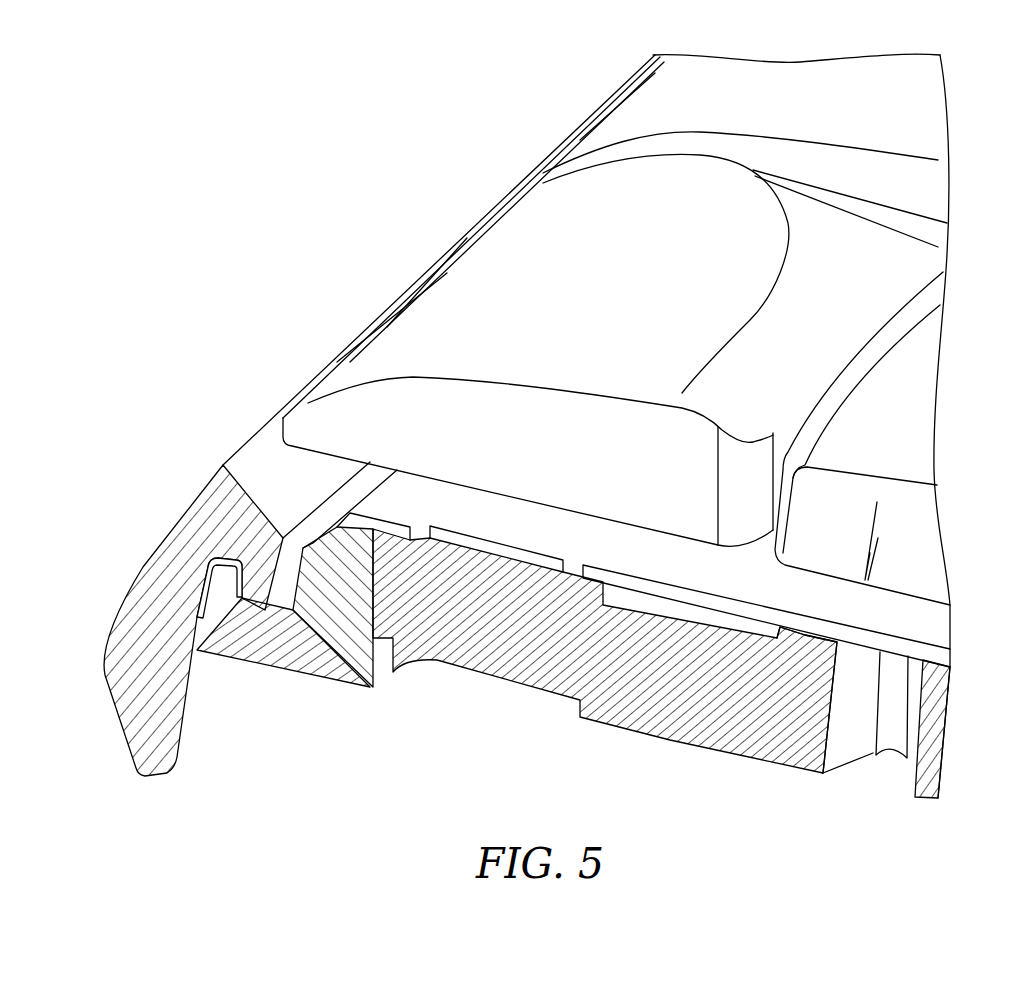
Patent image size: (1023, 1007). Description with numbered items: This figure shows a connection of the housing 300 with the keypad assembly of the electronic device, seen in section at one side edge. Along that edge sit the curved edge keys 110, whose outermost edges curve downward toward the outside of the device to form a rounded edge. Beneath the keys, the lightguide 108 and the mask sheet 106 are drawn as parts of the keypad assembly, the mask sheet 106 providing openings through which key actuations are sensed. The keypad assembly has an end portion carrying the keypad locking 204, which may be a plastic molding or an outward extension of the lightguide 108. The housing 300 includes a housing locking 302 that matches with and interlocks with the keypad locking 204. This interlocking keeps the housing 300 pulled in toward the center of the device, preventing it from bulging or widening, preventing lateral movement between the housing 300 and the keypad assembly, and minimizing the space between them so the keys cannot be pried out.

The edge keys 110 is at (403, 312).
The housing 300 is at (137, 596).
The keypad locking 204 is at (220, 578).
The housing locking 302 is at (270, 566).
The lightguide 108 is at (693, 737).
The mask sheet 106 is at (779, 630).